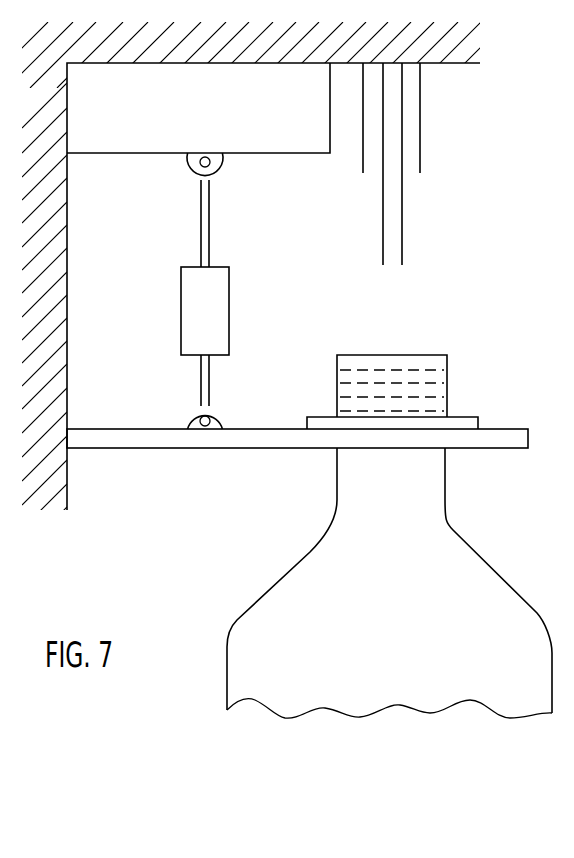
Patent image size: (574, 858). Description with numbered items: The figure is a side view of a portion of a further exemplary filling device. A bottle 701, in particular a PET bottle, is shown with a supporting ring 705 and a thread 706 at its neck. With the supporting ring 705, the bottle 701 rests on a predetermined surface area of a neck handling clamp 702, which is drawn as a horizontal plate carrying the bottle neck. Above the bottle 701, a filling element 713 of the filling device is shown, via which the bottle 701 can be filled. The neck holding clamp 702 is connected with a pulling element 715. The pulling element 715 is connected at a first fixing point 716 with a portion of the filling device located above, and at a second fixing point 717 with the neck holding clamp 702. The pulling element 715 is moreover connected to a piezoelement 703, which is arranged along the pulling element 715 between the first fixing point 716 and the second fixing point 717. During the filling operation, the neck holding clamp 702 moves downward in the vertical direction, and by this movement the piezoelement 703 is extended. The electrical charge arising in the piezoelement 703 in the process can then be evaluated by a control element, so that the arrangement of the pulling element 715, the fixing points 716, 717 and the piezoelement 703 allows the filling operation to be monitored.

The bottle 701 is at (494, 571).
The neck handling clamp 702 is at (149, 459).
The piezoelement 703 is at (181, 295).
The supporting ring 705 is at (313, 417).
The thread 706 is at (446, 366).
The filling element 713 is at (452, 140).
The pulling element 715 is at (191, 233).
The first fixing point 716 is at (188, 169).
The second fixing point 717 is at (189, 413).